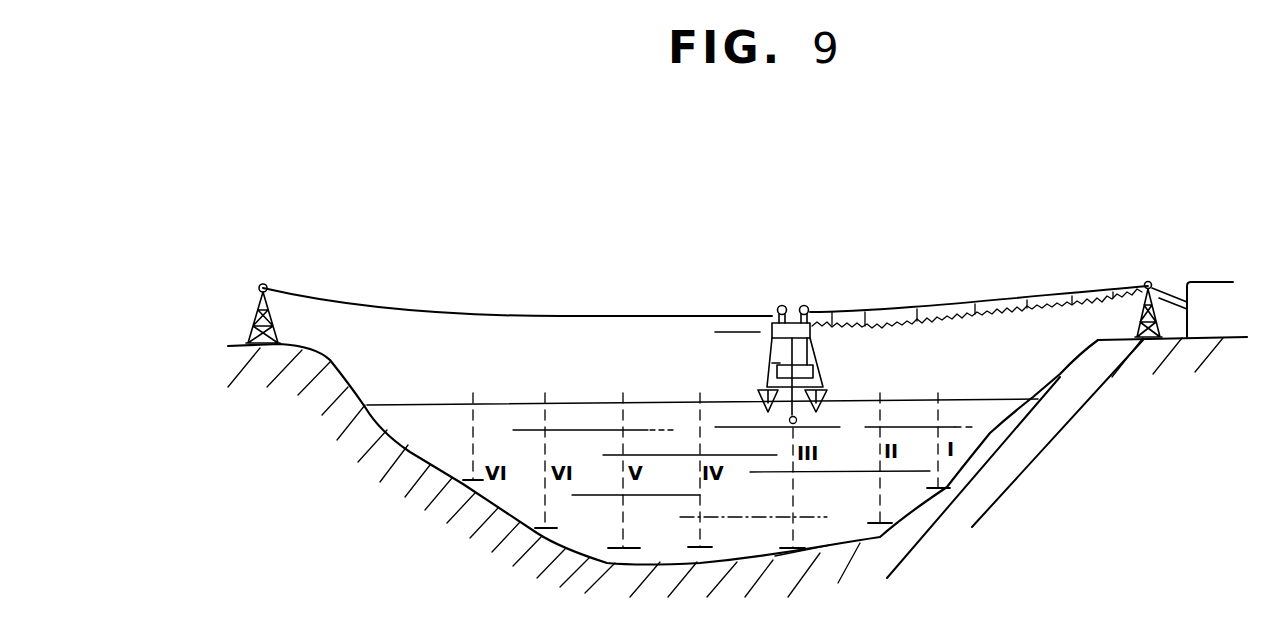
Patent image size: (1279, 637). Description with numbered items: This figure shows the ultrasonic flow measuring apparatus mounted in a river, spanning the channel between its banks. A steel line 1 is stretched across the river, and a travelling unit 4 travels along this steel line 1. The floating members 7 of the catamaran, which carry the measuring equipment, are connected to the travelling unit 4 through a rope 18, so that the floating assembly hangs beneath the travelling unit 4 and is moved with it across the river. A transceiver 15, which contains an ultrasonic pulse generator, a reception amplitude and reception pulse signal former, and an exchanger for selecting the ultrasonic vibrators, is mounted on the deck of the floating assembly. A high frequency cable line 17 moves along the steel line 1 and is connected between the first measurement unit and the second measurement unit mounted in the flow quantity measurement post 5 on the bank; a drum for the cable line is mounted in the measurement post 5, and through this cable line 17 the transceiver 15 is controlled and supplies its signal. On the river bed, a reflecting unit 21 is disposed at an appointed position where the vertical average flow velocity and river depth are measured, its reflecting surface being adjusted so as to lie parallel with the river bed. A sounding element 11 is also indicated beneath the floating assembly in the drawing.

The steel line 1 is at (578, 315).
The travelling unit 4 is at (788, 330).
The flow quantity measurement post 5 is at (1210, 309).
The floating members 7 is at (757, 398).
The sounding device 11 is at (797, 421).
The transceiver 15 is at (812, 368).
The high frequency cable line 17 is at (910, 330).
The rope 18 is at (772, 363).
The reflecting unit 21 is at (807, 547).